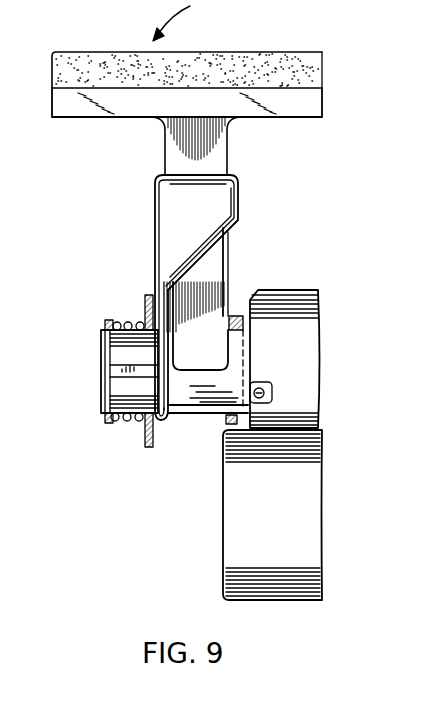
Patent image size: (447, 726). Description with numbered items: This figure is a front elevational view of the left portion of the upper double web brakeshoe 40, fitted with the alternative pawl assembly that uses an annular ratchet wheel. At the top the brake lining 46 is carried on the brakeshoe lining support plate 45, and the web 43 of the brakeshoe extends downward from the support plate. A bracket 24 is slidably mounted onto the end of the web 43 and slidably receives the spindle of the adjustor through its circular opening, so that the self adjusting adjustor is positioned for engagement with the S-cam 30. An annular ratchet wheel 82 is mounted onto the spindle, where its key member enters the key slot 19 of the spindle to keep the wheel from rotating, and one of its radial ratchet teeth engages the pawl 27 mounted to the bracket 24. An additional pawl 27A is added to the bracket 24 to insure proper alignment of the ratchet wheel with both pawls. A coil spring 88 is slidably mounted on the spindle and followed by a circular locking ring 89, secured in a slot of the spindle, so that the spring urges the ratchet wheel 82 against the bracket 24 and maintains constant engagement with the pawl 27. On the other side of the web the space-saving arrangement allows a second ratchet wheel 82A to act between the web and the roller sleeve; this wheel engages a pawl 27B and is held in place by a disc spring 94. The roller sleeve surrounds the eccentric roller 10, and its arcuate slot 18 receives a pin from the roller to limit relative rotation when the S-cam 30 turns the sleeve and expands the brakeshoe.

The double web brakeshoe 40 is at (186, 20).
The brake lining 46 is at (244, 60).
The brakeshoe lining support plate 45 is at (298, 107).
The web 43 is at (170, 156).
The bracket 24 is at (211, 323).
The pawl 27 is at (150, 298).
The additional pawl 27A is at (160, 423).
The pawl 27B is at (229, 313).
The annular ratchet wheel 82 is at (149, 443).
The ratchet wheel 82A is at (241, 317).
The disc spring 94 is at (234, 325).
The eccentric roller 10 is at (266, 385).
The slot 18 is at (268, 404).
The S-cam 30 is at (228, 487).
The key slot 19 is at (110, 370).
The coil spring 88 is at (126, 321).
The circular locking ring 89 is at (106, 323).